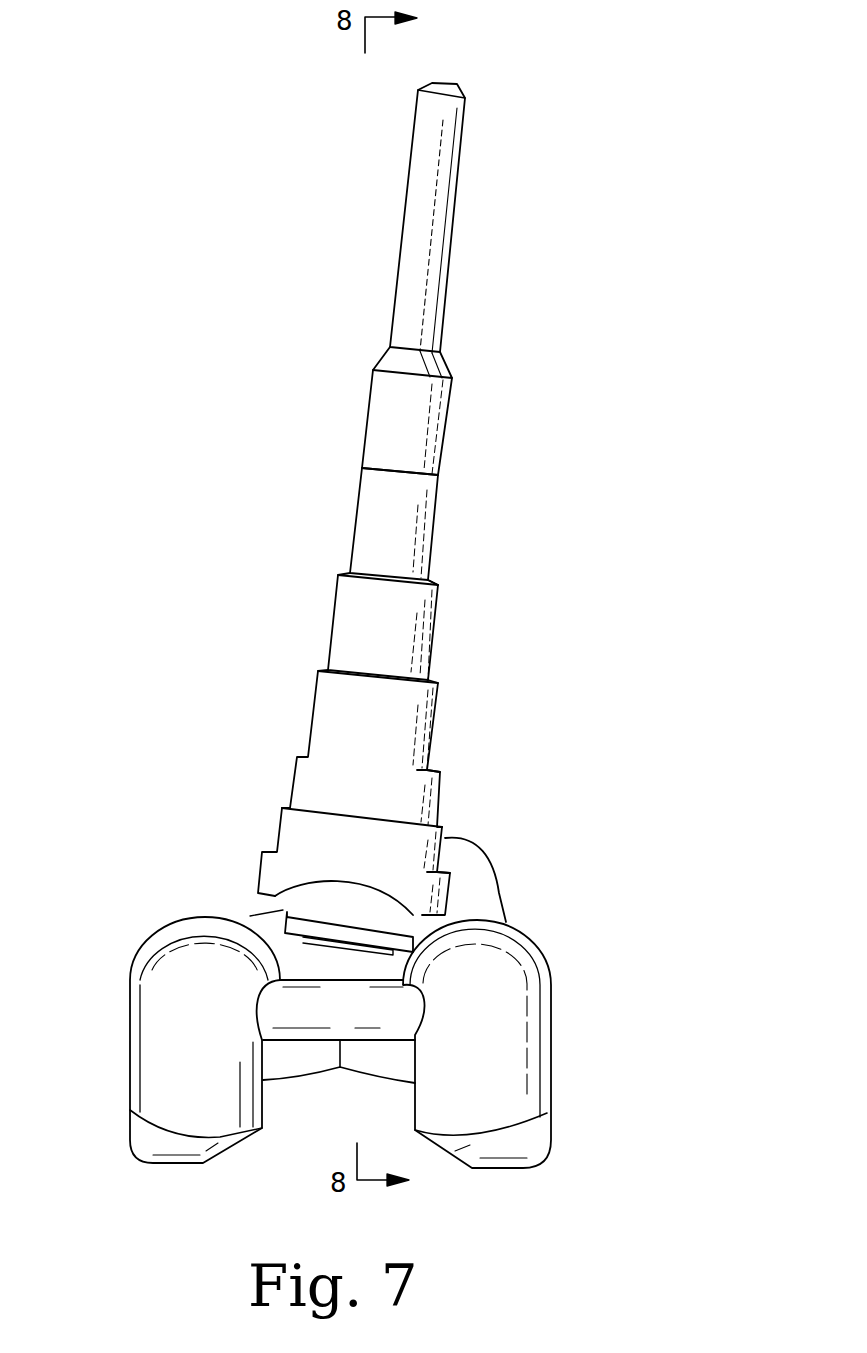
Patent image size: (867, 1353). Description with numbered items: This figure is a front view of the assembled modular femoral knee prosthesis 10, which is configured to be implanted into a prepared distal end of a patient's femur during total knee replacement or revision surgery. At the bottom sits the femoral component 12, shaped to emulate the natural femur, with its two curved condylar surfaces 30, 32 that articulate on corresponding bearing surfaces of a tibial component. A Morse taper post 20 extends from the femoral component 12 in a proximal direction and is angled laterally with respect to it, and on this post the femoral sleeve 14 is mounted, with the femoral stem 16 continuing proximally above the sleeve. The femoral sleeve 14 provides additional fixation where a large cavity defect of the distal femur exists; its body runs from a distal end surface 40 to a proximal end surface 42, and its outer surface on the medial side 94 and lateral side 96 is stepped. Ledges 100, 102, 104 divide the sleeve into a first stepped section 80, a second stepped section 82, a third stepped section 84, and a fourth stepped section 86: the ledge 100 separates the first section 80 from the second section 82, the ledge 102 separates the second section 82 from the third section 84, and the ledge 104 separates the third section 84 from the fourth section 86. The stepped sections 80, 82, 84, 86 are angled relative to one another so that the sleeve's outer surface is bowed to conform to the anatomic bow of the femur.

The modular femoral knee prosthesis 10 is at (613, 140).
The femoral component 12 is at (588, 963).
The femoral sleeve 14 is at (436, 631).
The femoral stem 16 is at (488, 250).
The Morse taper post 20 is at (258, 893).
The condylar surface 30 is at (147, 1140).
The condylar surface 32 is at (513, 1162).
The distal end surface 40 is at (255, 935).
The proximal end surface 42 is at (428, 470).
The first stepped section 80 is at (283, 819).
The second stepped section 82 is at (320, 688).
The third stepped section 84 is at (342, 600).
The fourth stepped section 86 is at (364, 494).
The medial side 94 is at (508, 625).
The lateral side 96 is at (276, 670).
The ledge 100 is at (440, 826).
The ledge 102 is at (438, 684).
The ledge 104 is at (430, 582).